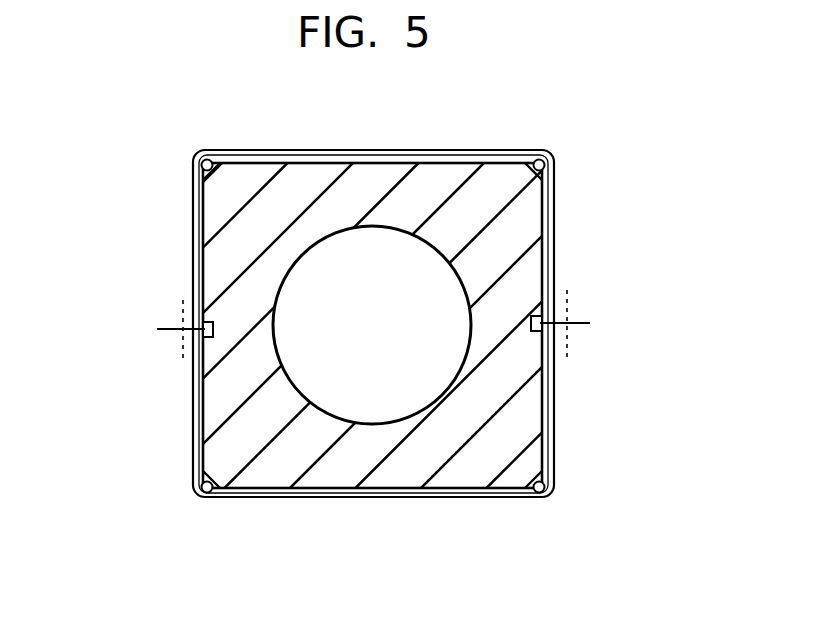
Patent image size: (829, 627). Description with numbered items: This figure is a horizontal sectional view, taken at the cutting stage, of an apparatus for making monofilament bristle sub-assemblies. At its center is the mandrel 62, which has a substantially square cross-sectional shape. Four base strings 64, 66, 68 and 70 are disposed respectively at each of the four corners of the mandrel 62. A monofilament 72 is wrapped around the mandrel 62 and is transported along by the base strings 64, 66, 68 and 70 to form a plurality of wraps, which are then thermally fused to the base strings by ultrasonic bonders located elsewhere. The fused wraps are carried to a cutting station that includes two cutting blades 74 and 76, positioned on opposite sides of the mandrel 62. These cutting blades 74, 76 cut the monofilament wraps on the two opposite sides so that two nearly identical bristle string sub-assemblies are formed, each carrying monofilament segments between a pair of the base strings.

The mandrel 62 is at (626, 260).
The base string 64 is at (198, 158).
The base string 66 is at (548, 152).
The base string 68 is at (196, 494).
The base string 70 is at (556, 494).
The monofilament 72 is at (560, 398).
The cutting blade 74 is at (150, 328).
The cutting blade 76 is at (598, 317).